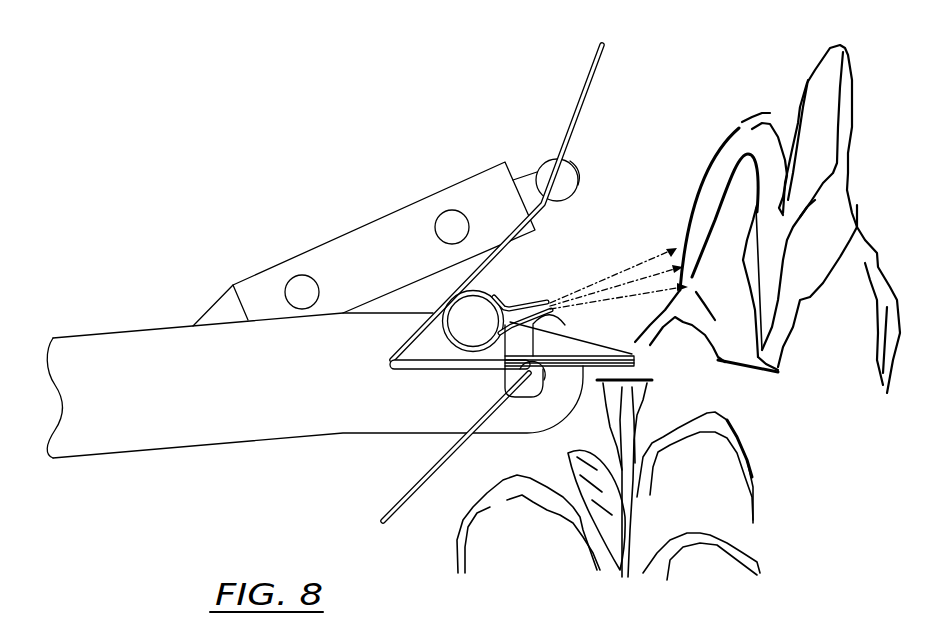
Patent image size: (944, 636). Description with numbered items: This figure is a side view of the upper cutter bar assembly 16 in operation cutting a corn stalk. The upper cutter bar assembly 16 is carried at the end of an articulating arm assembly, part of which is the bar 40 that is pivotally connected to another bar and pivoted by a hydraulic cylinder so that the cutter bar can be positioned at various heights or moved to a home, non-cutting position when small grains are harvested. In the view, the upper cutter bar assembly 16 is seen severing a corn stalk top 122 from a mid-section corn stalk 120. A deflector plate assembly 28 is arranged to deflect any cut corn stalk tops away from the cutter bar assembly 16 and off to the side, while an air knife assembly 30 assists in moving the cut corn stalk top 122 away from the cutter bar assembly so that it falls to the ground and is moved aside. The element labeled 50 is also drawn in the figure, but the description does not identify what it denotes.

The upper cutter bar assembly 16 is at (641, 360).
The deflector plate assembly 28 is at (593, 73).
The air knife assembly 30 is at (518, 303).
The bar 40 is at (150, 355).
The clamp jaw 50 is at (382, 248).
The mid-section corn stalk 120 is at (605, 543).
The corn stalk top 122 is at (805, 103).